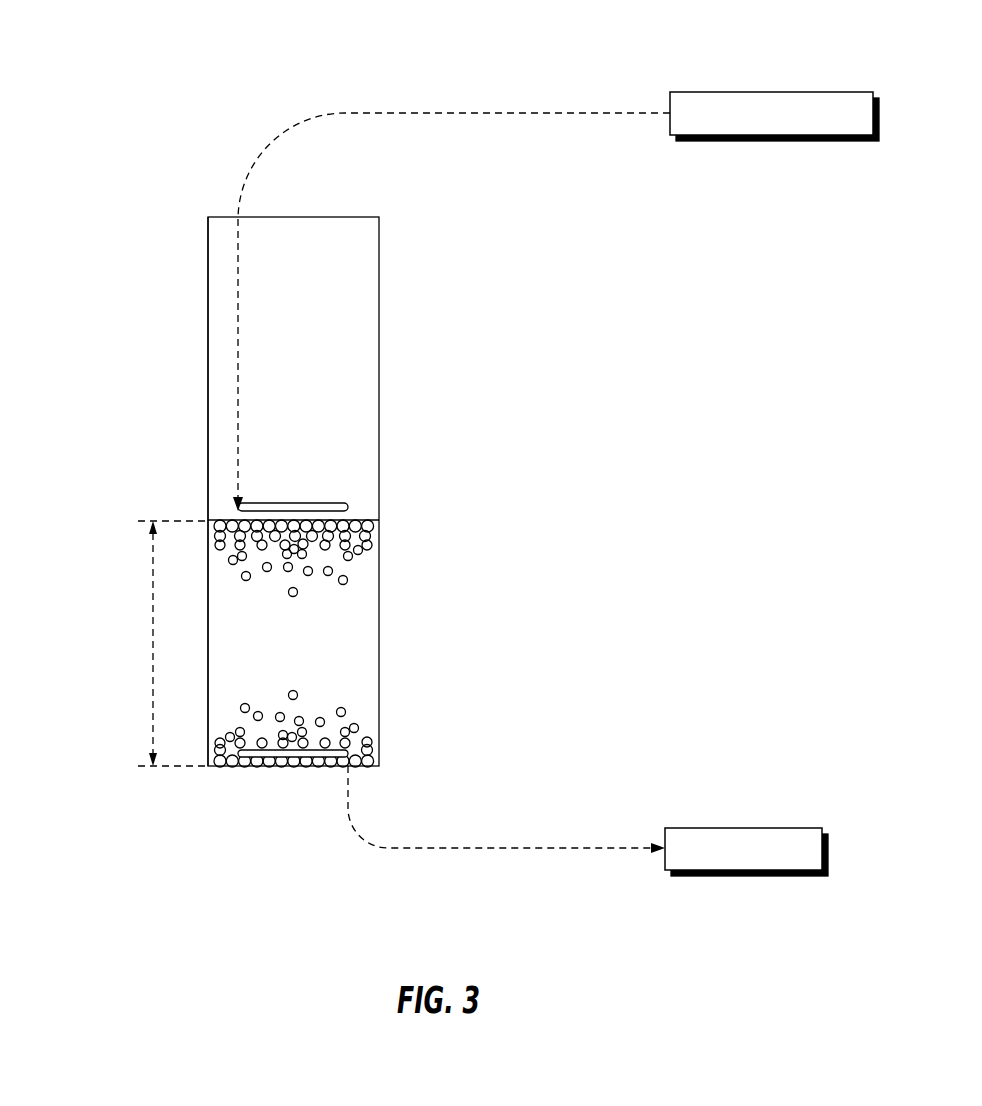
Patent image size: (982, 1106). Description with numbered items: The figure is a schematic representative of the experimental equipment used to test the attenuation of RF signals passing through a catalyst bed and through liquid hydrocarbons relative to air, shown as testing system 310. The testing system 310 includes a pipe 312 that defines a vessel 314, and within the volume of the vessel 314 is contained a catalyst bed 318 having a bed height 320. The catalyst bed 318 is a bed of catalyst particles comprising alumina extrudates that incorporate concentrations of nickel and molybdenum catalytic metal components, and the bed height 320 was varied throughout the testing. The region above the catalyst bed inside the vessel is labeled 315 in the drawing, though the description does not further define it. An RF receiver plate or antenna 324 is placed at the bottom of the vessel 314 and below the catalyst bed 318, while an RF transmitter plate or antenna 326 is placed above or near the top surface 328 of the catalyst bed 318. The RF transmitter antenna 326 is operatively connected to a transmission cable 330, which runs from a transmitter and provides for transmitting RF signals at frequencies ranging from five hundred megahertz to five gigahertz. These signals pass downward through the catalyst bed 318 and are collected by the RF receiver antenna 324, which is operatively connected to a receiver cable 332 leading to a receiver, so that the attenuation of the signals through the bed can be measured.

The testing system 310 is at (137, 62).
The pipe 312 is at (379, 285).
The vessel 314 is at (175, 264).
The headspace 315 is at (315, 381).
The catalyst bed 318 is at (313, 657).
The bed height 320 is at (152, 640).
The RF receiver plate or antenna 324 is at (272, 757).
The RF transmitter plate or antenna 326 is at (318, 500).
The top surface 328 is at (360, 520).
The transmission cable 330 is at (358, 113).
The receiver cable 332 is at (512, 848).